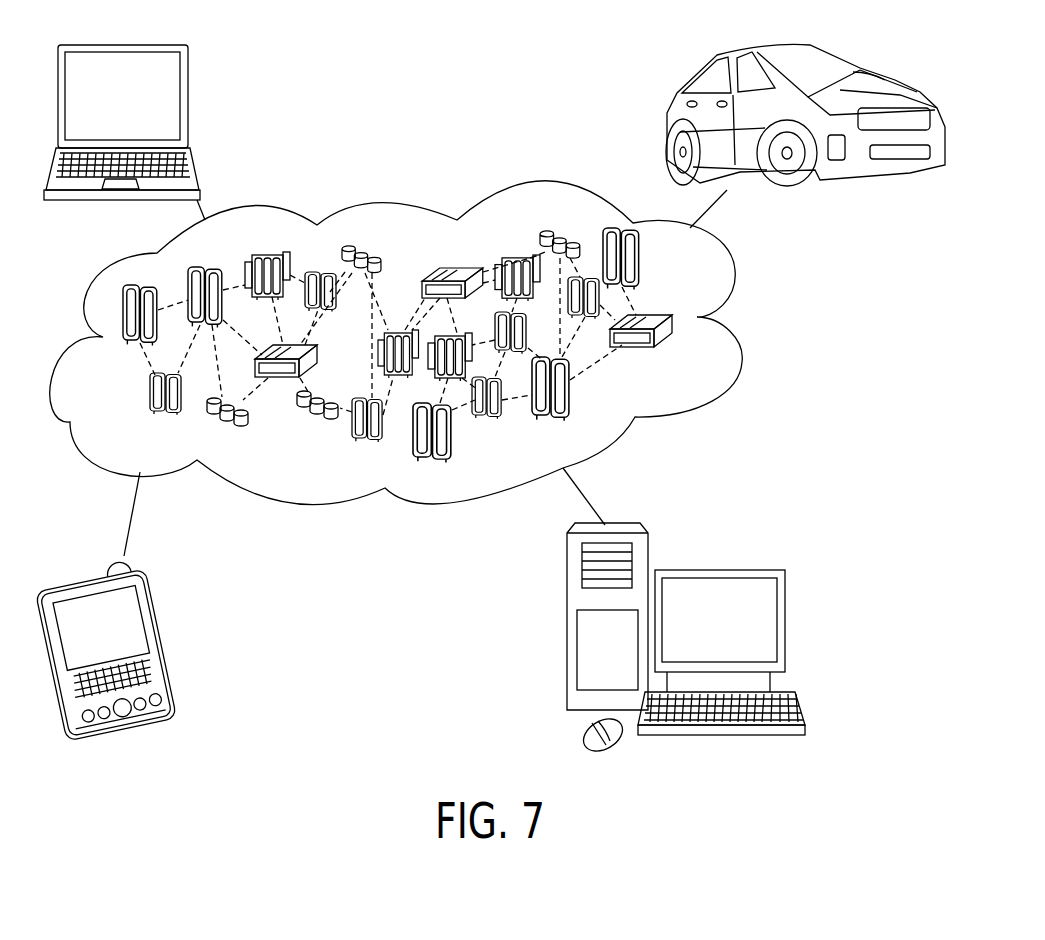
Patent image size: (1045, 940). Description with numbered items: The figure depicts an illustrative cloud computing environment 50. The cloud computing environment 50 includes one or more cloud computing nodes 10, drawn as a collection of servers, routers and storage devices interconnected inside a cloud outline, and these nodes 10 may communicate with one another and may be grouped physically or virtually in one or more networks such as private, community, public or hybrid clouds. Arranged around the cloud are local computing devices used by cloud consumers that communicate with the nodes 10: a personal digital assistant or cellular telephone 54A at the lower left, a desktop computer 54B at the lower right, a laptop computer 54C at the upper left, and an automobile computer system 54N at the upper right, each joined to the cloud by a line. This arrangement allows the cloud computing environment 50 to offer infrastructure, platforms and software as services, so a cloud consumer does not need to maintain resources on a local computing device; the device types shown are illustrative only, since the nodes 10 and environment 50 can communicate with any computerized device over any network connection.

The cloud computing nodes 10 is at (695, 375).
The cloud computing environment 50 is at (735, 270).
The personal digital assistant or cellular telephone 54A is at (157, 620).
The desktop computer 54B is at (785, 620).
The laptop computer 54C is at (188, 100).
The automobile computer system 54N is at (853, 64).